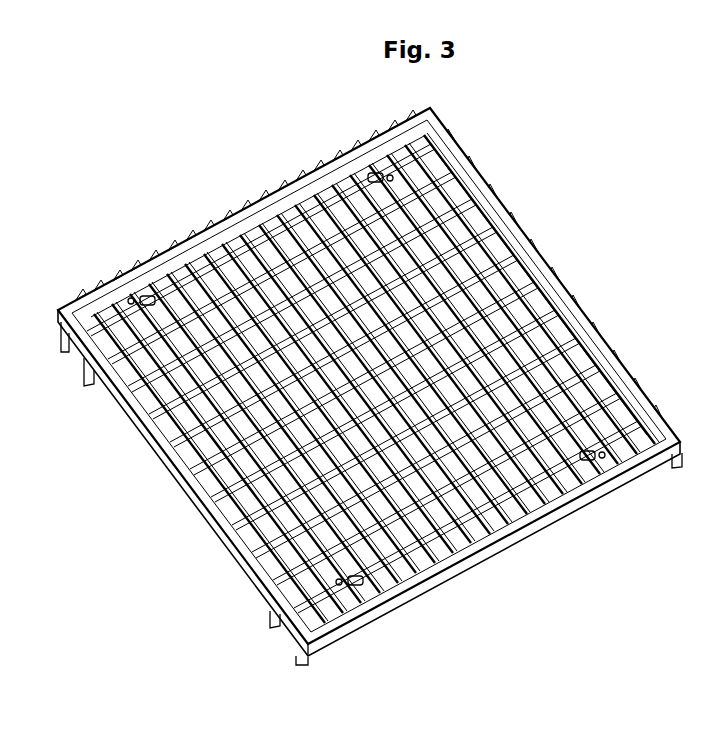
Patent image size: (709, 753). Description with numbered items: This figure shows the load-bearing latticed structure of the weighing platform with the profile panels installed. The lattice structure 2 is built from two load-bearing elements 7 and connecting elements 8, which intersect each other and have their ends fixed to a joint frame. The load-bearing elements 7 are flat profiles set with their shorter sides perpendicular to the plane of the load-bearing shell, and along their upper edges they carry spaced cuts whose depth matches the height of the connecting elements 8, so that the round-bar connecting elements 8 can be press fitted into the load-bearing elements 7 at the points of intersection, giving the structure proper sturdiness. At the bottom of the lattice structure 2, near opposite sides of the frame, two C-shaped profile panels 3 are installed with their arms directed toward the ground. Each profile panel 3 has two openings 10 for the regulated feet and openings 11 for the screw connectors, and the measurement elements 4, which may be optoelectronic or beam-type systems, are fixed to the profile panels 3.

The lattice structure 2 is at (402, 686).
The profile panel 3 is at (246, 672).
The measurement element 4 is at (706, 512).
The load-bearing element 7 is at (595, 614).
The connecting element 8 is at (676, 311).
The opening for regulated feet 10 is at (104, 442).
The opening for screw connectors 11 is at (480, 642).